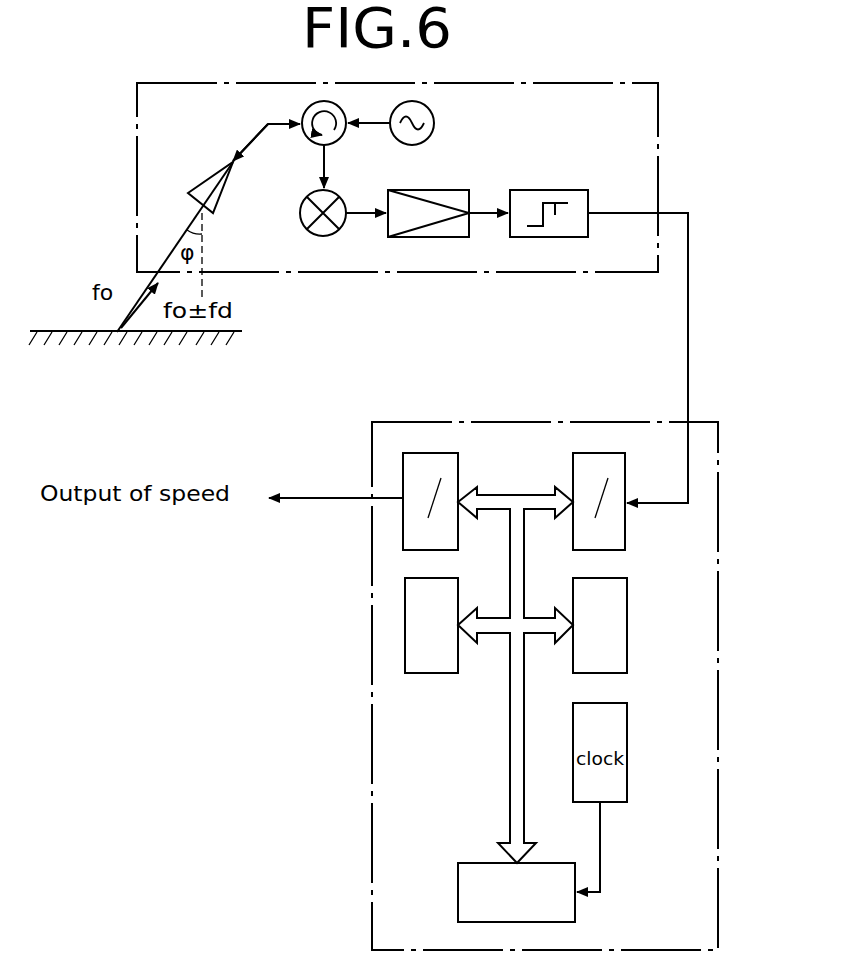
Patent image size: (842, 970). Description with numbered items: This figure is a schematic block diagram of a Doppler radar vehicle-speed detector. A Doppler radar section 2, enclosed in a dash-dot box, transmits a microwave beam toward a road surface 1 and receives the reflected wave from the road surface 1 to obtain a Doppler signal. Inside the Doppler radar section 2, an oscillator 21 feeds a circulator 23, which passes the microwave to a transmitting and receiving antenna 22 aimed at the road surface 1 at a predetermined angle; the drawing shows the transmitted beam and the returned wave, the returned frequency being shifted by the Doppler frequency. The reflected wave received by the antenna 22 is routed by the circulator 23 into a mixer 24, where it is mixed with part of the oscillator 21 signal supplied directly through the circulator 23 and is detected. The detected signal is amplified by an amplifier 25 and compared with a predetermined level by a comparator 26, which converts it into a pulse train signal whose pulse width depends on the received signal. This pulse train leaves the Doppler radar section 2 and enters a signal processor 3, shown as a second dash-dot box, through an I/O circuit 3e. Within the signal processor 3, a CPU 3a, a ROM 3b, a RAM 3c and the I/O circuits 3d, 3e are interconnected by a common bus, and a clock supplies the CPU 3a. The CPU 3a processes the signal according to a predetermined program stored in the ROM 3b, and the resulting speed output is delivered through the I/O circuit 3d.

The road surface 1 is at (90, 346).
The Doppler radar section 2 is at (650, 122).
The signal processor 3 is at (703, 621).
The CPU 3a is at (470, 863).
The ROM 3b is at (435, 673).
The RAM 3c is at (627, 648).
The I/O circuit 3d is at (458, 468).
The I/O circuit 3e is at (625, 478).
The oscillator 21 is at (434, 123).
The transmitting and receiving antenna 22 is at (229, 183).
The circulator 23 is at (305, 112).
The mixer 24 is at (310, 233).
The amplifier 25 is at (448, 190).
The comparator 26 is at (575, 190).